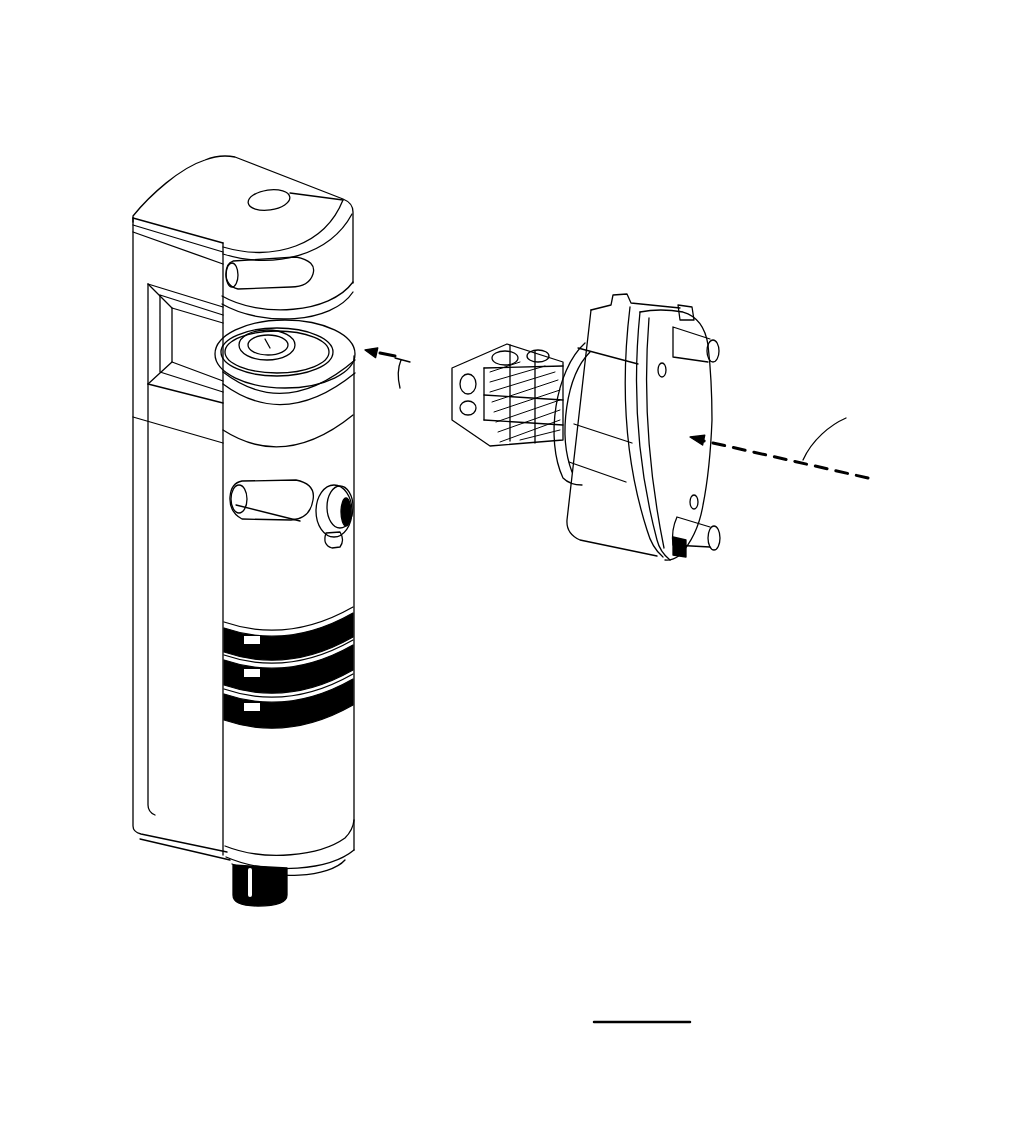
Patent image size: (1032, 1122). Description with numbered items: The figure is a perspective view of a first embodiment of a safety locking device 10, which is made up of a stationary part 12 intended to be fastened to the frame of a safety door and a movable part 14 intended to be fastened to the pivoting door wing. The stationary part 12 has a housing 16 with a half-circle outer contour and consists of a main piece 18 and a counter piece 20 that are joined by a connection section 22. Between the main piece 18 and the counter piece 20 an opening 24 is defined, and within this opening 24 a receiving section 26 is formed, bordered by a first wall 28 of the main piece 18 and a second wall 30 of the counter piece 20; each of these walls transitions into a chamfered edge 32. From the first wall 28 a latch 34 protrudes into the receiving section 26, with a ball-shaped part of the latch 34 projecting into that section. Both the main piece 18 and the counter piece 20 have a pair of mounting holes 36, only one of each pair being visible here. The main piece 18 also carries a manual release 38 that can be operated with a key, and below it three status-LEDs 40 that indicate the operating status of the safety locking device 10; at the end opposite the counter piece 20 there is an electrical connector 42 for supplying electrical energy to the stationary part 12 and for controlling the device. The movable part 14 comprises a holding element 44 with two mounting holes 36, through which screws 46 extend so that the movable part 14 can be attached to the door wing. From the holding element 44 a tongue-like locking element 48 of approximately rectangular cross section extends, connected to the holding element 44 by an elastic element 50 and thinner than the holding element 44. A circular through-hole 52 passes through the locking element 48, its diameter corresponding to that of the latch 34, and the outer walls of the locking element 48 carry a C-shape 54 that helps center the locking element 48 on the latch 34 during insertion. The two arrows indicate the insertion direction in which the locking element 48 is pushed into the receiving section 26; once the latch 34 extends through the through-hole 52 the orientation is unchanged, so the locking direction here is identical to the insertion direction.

The safety locking device 10 is at (498, 104).
The stationary part 12 is at (254, 148).
The movable part 14 is at (710, 283).
The housing 16 is at (271, 590).
The main piece 18 is at (200, 777).
The counter piece 20 is at (225, 309).
The connection section 22 is at (137, 326).
The opening 24 is at (348, 308).
The receiving section 26 is at (340, 327).
The first wall 28 is at (283, 302).
The second wall 30 is at (322, 326).
The chamfered edge 32 is at (222, 298).
The latch 34 is at (268, 343).
The mounting holes 36 is at (133, 234).
The manual release 38 is at (362, 513).
The status-LEDs 40 is at (348, 700).
The electrical connector 42 is at (265, 908).
The holding element 44 is at (690, 393).
The screws 46 is at (712, 346).
The locking element 48 is at (513, 357).
The elastic element 50 is at (552, 462).
The through-hole 52 is at (507, 347).
The C-shape 54 is at (473, 423).